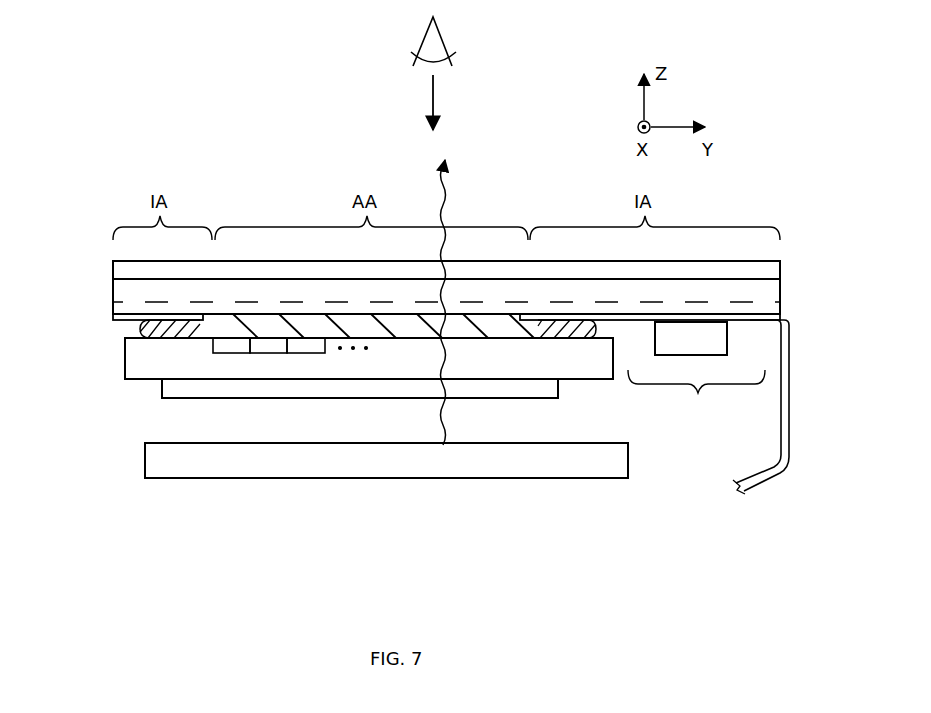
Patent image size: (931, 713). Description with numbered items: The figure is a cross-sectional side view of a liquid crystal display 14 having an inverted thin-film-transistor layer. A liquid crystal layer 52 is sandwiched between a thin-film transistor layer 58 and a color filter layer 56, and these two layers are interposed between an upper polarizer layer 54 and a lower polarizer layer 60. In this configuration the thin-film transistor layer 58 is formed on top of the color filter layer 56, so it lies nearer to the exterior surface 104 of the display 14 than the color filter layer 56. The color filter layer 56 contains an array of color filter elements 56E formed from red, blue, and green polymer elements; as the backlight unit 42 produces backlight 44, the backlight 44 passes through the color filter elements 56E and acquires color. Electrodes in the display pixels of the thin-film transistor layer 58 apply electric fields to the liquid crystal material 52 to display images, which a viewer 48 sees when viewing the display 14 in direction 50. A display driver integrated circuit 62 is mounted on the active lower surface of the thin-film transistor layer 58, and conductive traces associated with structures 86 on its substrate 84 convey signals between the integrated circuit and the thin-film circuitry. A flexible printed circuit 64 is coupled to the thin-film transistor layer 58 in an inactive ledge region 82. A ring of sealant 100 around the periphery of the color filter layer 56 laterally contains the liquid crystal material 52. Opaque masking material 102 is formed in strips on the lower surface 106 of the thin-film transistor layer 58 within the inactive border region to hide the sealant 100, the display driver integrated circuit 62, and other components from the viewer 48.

The display 14 is at (106, 183).
The backlight unit 42 is at (242, 478).
The backlight 44 is at (440, 192).
The viewer 48 is at (443, 38).
The direction 50 is at (433, 108).
The liquid crystal layer 52 is at (272, 322).
The upper polarizer layer 54 is at (777, 270).
The color filter layer 56 is at (377, 382).
The color filter elements 56E is at (232, 350).
The thin-film transistor layer 58 is at (418, 293).
The lower polarizer layer 60 is at (533, 394).
The display driver integrated circuit 62 is at (720, 337).
The flexible printed circuit 64 is at (758, 487).
The inactive ledge region 82 is at (696, 394).
The substrate 84 is at (113, 281).
The structures 86 is at (113, 312).
The sealant 100 is at (145, 322).
The opaque masking material 102 is at (117, 320).
The exterior surface 104 is at (303, 261).
The lower surface 106 is at (398, 298).